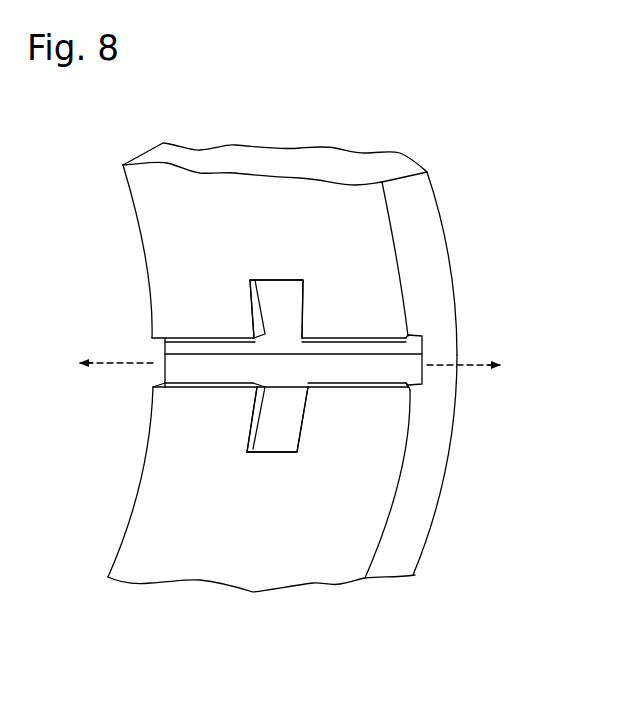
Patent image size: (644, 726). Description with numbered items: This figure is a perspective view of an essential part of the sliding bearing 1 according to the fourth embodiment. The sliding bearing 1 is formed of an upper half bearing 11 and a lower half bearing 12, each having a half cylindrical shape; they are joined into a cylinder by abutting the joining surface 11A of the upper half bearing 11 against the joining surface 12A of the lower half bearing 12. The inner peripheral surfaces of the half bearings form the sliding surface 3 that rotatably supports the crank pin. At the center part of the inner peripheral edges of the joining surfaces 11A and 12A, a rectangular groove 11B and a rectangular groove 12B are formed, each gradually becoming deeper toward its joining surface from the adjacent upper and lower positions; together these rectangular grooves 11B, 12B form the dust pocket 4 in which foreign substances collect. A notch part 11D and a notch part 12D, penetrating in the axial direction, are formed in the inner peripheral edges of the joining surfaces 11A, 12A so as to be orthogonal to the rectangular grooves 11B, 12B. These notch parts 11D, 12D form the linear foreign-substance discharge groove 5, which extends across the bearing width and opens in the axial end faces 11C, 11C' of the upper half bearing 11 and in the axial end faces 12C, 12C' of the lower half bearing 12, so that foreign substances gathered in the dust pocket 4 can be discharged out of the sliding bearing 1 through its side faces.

The sliding bearing 1 is at (481, 227).
The sliding surface 3 is at (288, 558).
The dust pocket 4 is at (284, 348).
The foreign-substance discharge groove 5 is at (233, 363).
The upper half bearing 11 is at (424, 210).
The joining surface of upper half bearing 11A is at (423, 356).
The rectangular groove of upper half bearing 11B is at (262, 314).
The axial end face of upper half bearing 11C is at (487, 263).
The axial end face of upper half bearing 11C' is at (107, 251).
The notch part of upper half bearing 11D is at (337, 340).
The lower half bearing 12 is at (416, 519).
The joining surface of lower half bearing 12A is at (450, 354).
The rectangular groove of lower half bearing 12B is at (265, 414).
The axial end face of lower half bearing 12C is at (490, 465).
The axial end face of lower half bearing 12C' is at (89, 482).
The notch part of lower half bearing 12D is at (338, 384).